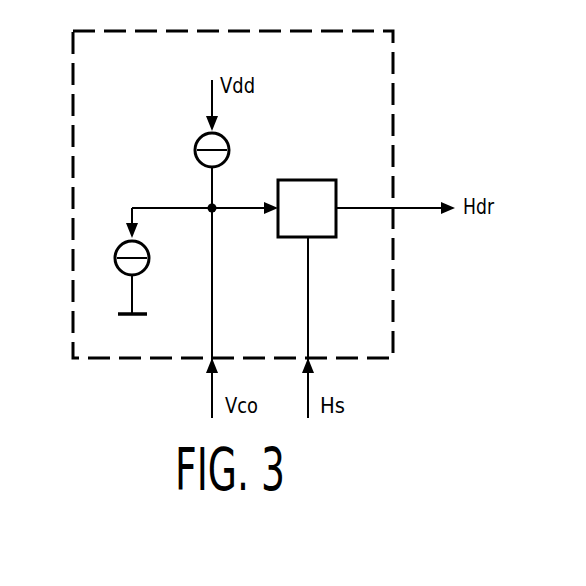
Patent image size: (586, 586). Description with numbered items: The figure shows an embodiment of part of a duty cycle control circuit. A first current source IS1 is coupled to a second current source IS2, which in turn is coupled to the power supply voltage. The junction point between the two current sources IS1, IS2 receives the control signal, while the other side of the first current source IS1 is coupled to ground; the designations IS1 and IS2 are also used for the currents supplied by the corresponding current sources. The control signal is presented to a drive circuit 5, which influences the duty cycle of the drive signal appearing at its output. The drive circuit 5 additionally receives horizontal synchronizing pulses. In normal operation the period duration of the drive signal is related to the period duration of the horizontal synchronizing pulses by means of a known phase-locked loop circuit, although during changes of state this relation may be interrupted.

The first current source IS1 is at (168, 272).
The second current source IS2 is at (247, 161).
The drive circuit 5 is at (337, 189).